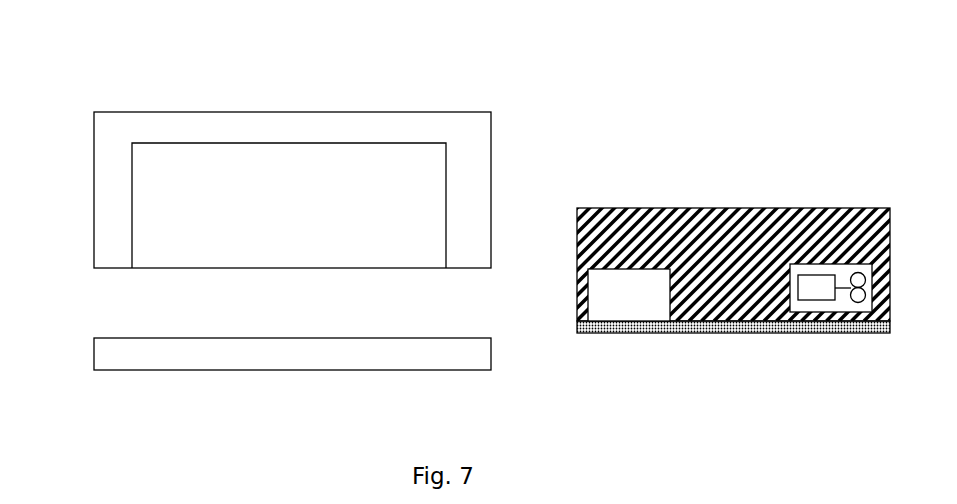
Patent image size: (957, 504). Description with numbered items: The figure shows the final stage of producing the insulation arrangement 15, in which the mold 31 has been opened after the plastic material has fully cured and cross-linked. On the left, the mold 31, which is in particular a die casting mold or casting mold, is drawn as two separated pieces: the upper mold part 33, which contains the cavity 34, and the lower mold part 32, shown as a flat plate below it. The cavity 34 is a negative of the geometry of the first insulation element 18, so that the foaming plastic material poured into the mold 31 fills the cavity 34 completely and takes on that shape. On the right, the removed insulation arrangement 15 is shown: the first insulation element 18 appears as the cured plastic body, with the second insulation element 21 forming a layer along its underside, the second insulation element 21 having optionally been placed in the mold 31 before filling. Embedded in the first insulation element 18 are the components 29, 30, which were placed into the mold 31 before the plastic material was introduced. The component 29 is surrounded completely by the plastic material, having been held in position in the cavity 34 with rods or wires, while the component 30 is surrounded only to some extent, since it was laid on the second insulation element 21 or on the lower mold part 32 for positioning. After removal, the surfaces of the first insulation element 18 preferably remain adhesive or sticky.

The insulation arrangement 15 is at (727, 198).
The first insulation element 18 is at (793, 208).
The second insulation element 21 is at (812, 333).
The component 29 is at (843, 264).
The component 30 is at (648, 269).
The mold 31 is at (172, 101).
The lower mold part 32 is at (94, 353).
The upper mold part 33 is at (94, 172).
The cavity 34 is at (308, 203).